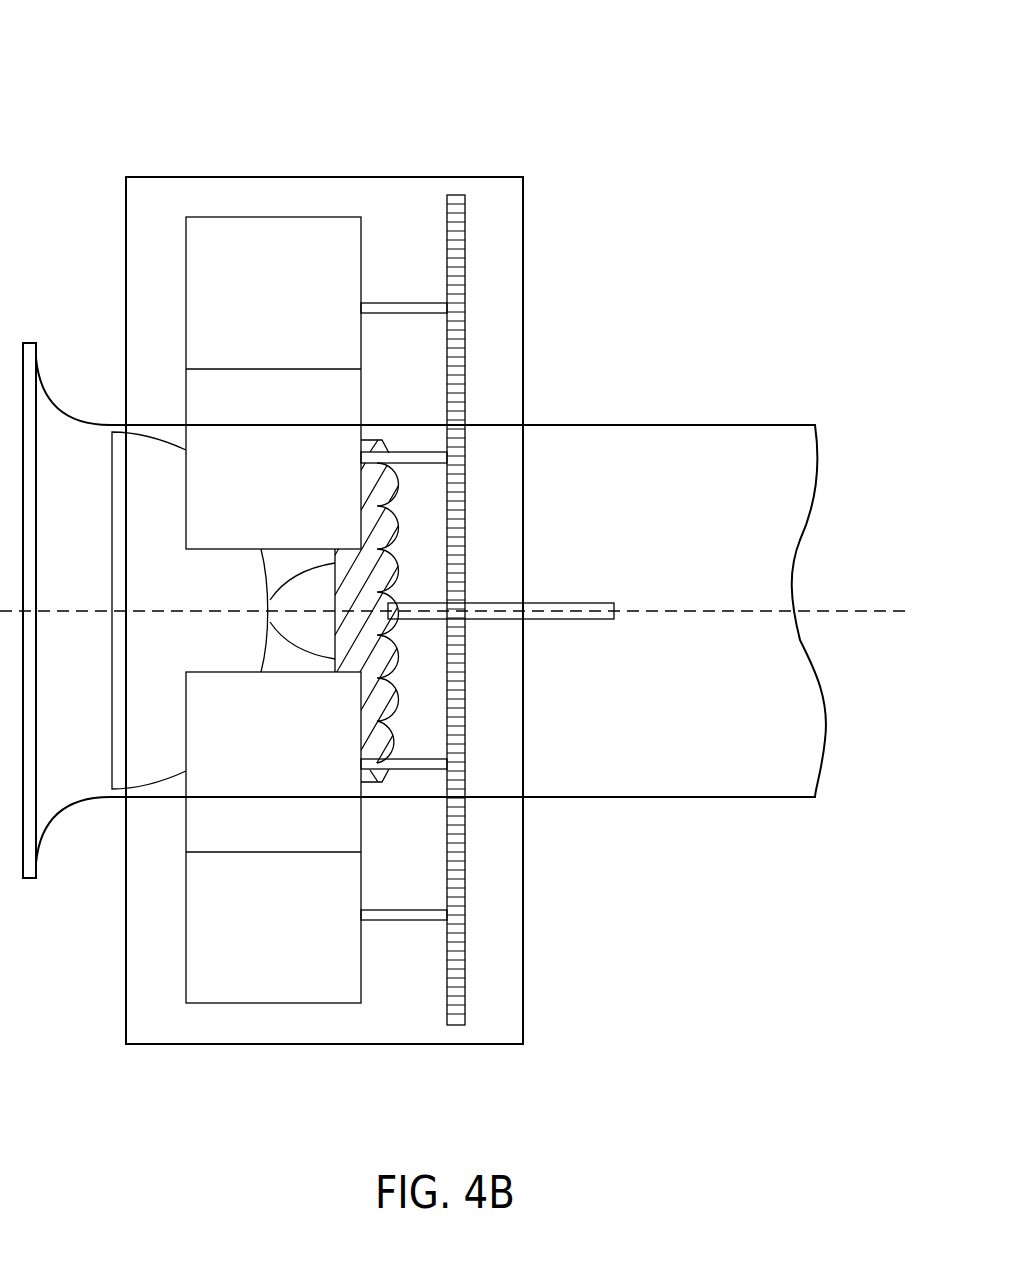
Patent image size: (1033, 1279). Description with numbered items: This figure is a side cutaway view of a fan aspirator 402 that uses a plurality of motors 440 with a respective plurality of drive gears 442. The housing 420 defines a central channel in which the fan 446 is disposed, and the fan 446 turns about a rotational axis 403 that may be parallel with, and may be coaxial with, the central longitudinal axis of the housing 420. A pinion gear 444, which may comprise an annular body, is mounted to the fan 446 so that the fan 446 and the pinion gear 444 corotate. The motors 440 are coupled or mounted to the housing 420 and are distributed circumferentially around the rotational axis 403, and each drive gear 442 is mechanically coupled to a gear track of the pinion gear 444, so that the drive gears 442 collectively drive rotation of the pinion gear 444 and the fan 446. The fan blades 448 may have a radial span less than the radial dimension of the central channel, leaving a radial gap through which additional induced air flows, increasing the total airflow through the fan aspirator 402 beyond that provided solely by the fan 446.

The fan aspirator 402 is at (113, 104).
The rotational axis 403 is at (858, 617).
The housing 420 is at (593, 425).
The motors 440 is at (257, 398).
The drive gears 442 is at (459, 440).
The pinion gear 444 is at (455, 540).
The fan 446 is at (417, 687).
The fan blades 448 is at (383, 648).